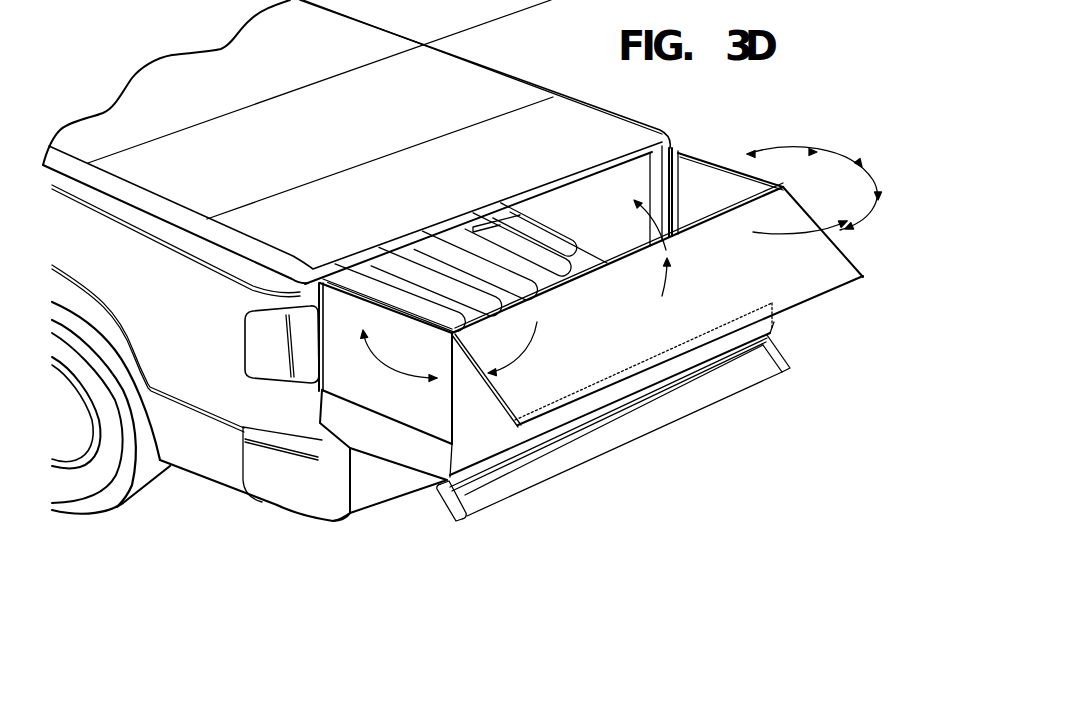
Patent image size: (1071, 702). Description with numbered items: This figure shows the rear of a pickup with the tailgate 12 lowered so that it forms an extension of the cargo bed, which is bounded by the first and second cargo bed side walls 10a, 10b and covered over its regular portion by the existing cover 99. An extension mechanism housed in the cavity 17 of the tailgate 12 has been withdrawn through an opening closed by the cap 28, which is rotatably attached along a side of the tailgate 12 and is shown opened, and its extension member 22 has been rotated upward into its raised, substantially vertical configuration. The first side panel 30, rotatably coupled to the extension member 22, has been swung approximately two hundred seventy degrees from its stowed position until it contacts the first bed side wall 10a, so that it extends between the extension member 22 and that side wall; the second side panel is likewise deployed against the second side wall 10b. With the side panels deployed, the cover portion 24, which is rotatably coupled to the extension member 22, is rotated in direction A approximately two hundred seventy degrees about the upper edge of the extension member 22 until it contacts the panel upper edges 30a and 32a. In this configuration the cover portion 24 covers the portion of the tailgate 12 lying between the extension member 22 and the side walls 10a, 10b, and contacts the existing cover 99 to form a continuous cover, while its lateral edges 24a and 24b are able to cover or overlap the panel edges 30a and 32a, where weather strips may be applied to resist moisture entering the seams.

The existing cover 99 is at (433, 67).
The first cargo bed side wall 10a is at (235, 358).
The second cargo bed side wall 10b is at (603, 200).
The tailgate 12 is at (427, 447).
The first side panel 30 is at (362, 392).
The upper edge of first side panel 30a is at (362, 300).
The cover portion 24 is at (811, 300).
The extension member 22 is at (470, 407).
The lateral edge of cover portion 24a is at (497, 410).
The cavity 17 is at (520, 427).
The cap 28 is at (647, 415).
The lateral edge of cover portion 24b is at (852, 261).
The upper edge of second side panel 32a is at (720, 167).
The direction of rotation of cover portion A is at (666, 246).